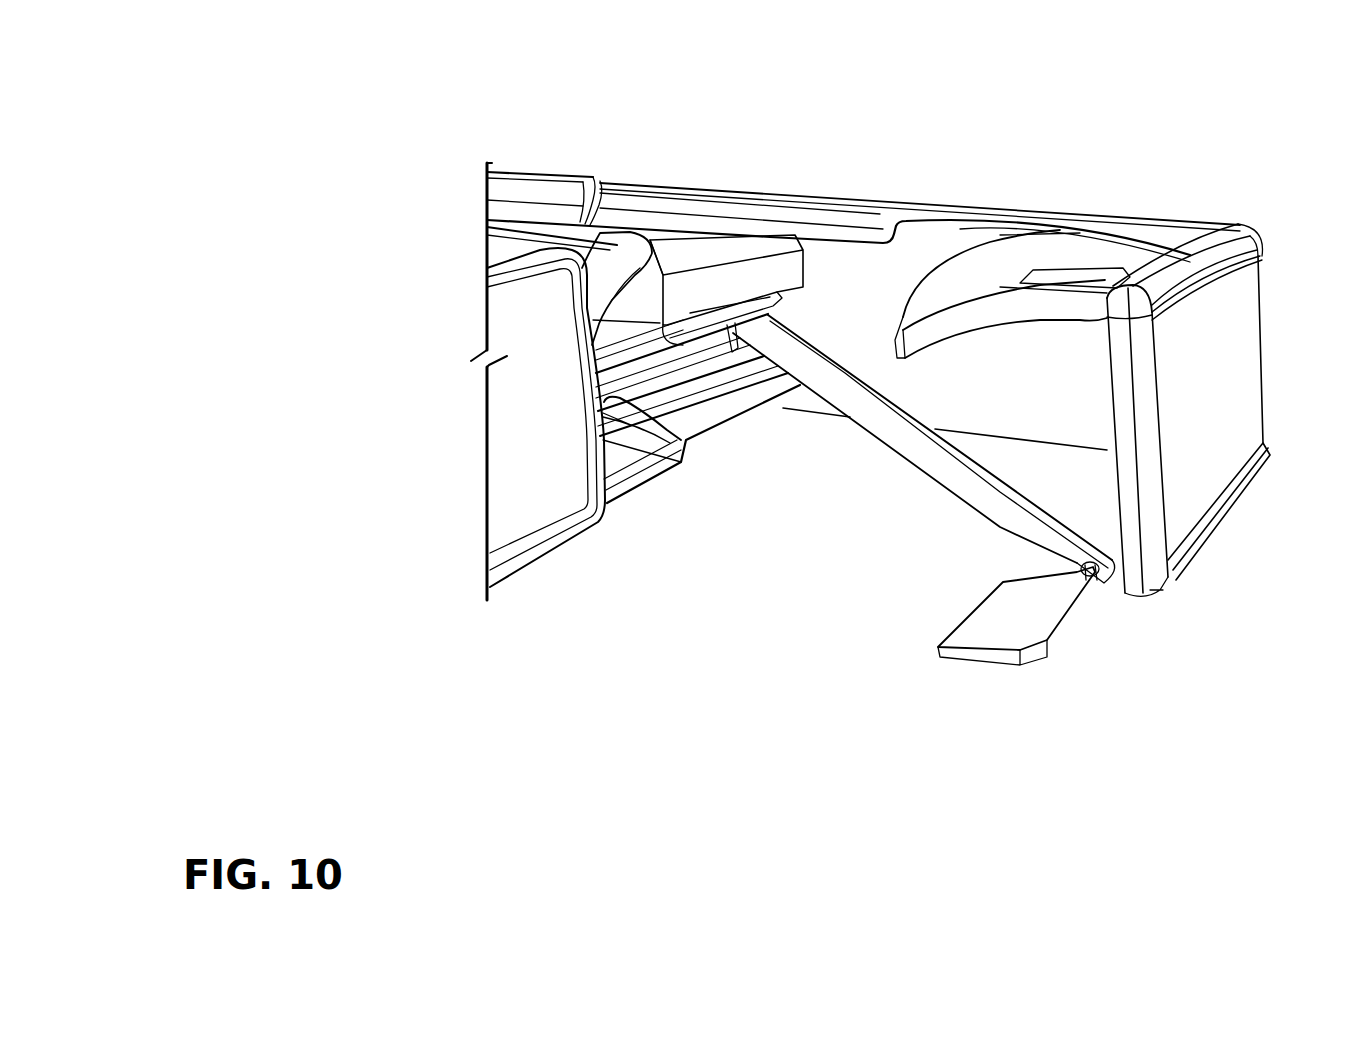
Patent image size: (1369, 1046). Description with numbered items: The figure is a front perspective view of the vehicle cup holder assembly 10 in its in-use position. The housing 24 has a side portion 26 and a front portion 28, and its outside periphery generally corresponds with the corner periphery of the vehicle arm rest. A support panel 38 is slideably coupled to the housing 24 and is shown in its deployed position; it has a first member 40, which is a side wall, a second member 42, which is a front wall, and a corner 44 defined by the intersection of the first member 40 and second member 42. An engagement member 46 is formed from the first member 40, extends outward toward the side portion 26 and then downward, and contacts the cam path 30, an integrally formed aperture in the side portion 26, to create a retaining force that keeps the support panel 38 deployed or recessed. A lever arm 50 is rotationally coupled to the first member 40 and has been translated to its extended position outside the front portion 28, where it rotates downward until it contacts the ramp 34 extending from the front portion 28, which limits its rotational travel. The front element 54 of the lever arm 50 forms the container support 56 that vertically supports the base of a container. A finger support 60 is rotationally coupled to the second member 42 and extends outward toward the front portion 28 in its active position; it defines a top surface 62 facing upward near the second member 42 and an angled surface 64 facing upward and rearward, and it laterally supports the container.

The vehicle cup holder assembly 10 is at (1222, 104).
The housing 24 is at (515, 170).
The side portion 26 is at (594, 170).
The cam path 30 is at (618, 172).
The engagement member 46 is at (778, 192).
The support panel 38 is at (947, 230).
The first member 40 is at (1007, 220).
The angled surface 64 is at (1060, 277).
The top surface 62 is at (1138, 270).
The finger support 60 is at (1170, 225).
The corner 44 is at (1258, 308).
The second member 42 is at (1218, 504).
The front element 54 is at (1095, 580).
The container support 56 is at (1047, 656).
The lever arm 50 is at (887, 410).
The front portion 28 is at (727, 355).
The ramp 34 is at (717, 427).